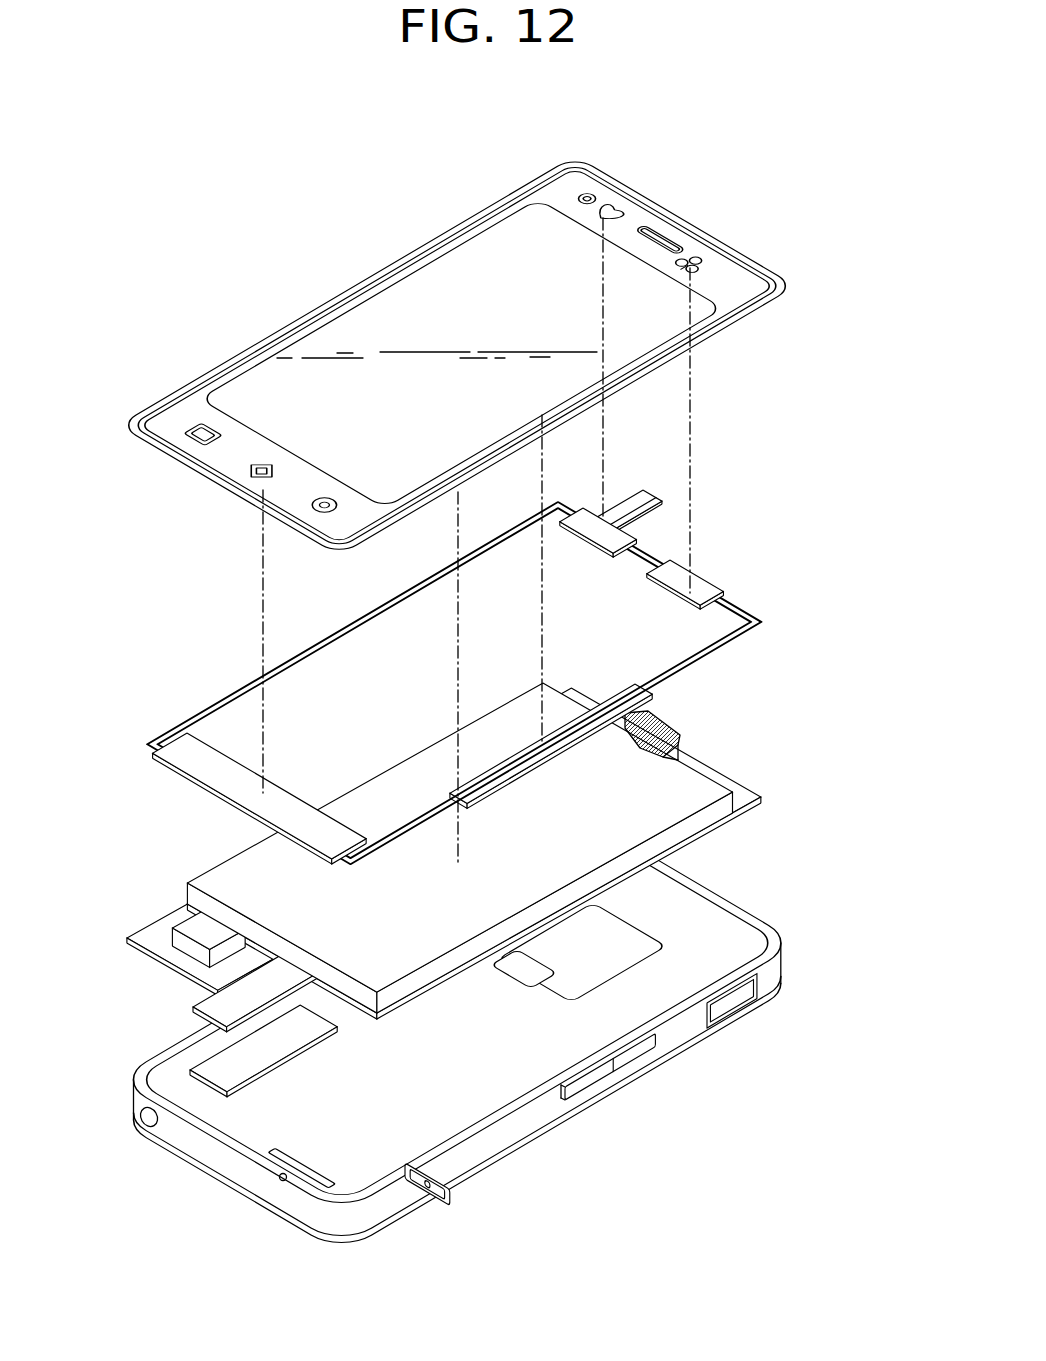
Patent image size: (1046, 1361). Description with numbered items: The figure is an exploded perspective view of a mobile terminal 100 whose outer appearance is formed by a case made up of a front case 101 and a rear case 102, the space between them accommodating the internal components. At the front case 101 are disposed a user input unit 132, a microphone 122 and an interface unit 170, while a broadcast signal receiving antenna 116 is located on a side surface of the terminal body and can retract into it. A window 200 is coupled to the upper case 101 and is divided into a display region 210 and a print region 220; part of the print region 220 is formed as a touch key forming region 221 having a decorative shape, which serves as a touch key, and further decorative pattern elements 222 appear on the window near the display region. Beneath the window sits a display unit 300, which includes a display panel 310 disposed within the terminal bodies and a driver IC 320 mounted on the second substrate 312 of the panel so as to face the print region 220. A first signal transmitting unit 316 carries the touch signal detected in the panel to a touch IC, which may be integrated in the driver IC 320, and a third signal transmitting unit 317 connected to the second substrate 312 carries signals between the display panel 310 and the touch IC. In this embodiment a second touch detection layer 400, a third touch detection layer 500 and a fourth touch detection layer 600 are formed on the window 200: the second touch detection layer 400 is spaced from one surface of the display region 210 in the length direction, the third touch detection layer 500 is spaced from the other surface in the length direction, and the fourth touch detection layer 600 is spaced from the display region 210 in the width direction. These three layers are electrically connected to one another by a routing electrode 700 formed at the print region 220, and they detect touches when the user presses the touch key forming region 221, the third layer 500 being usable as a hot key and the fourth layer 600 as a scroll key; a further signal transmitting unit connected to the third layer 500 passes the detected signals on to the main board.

The mobile terminal 100 is at (808, 192).
The front case 101 is at (770, 960).
The rear case 102 is at (781, 979).
The broadcast signal receiving antenna 116 is at (143, 1121).
The microphone 122 is at (282, 1180).
The user input unit 132 is at (592, 1085).
The interface unit 170 is at (738, 1003).
The window 200 is at (451, 355).
The display region 210 is at (350, 320).
The print region 220 is at (270, 340).
The touch key forming region 221 is at (203, 430).
The decorative icons 222 is at (601, 219).
The display unit 300 is at (414, 890).
The display panel 310 is at (231, 878).
The second substrate 312 is at (157, 942).
The first signal transmitting unit 316 is at (227, 1005).
The third signal transmitting unit 317 is at (218, 1070).
The driver IC 320 is at (197, 925).
The second touch detection layer 400 is at (176, 750).
The third touch detection layer 500 is at (630, 533).
The fourth touch detection layer 600 is at (570, 730).
The routing electrode 700 is at (233, 690).